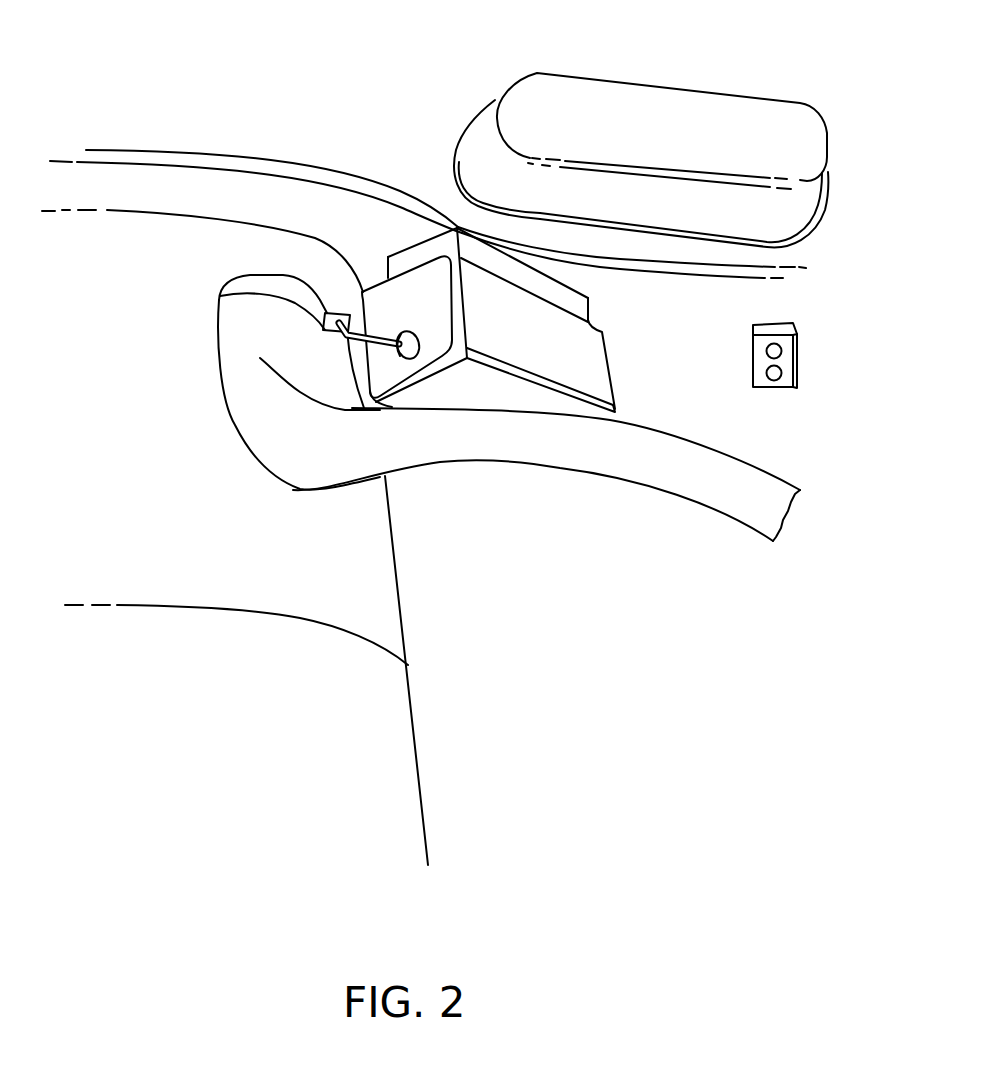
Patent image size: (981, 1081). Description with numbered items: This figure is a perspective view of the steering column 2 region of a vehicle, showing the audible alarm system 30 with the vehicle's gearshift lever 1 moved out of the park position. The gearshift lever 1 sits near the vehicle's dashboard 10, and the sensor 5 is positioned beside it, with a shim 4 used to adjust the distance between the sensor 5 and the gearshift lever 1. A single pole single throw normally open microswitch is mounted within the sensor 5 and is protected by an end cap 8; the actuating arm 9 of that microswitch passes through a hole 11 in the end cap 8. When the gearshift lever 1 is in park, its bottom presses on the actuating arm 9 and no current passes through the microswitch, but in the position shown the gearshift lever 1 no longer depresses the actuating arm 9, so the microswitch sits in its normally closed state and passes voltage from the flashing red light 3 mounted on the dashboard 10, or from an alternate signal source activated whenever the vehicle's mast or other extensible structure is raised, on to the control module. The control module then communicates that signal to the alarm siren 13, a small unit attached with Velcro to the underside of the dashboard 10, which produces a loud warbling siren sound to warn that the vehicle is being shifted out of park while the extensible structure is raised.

The gearshift lever 1 is at (670, 473).
The pillar 2 is at (365, 552).
The flashing red light 3 is at (670, 126).
The shim 4 is at (570, 302).
The sensor 5 is at (585, 363).
The end cap 8 is at (423, 284).
The actuating arm 9 is at (222, 297).
The dashboard 10 is at (582, 638).
The hole 11 is at (397, 338).
The alarm siren 13 is at (790, 385).
The audible alarm system 30 is at (90, 99).